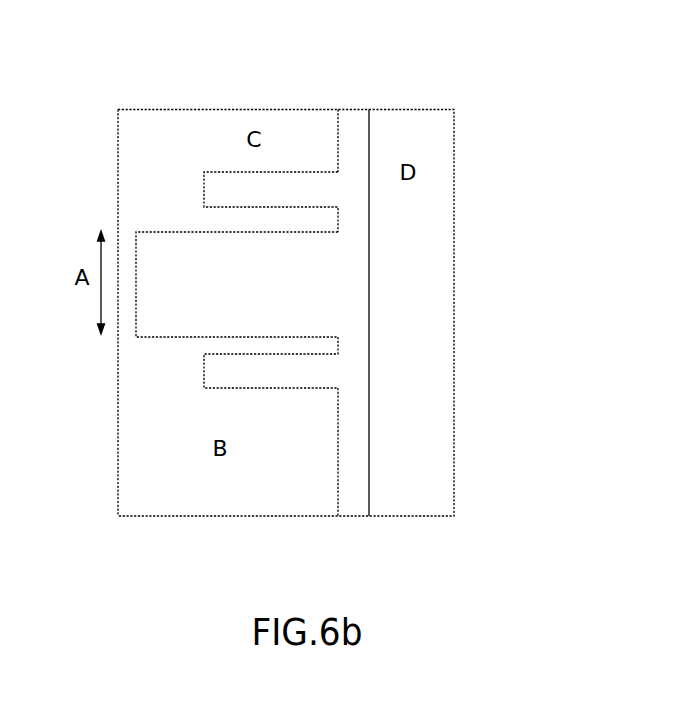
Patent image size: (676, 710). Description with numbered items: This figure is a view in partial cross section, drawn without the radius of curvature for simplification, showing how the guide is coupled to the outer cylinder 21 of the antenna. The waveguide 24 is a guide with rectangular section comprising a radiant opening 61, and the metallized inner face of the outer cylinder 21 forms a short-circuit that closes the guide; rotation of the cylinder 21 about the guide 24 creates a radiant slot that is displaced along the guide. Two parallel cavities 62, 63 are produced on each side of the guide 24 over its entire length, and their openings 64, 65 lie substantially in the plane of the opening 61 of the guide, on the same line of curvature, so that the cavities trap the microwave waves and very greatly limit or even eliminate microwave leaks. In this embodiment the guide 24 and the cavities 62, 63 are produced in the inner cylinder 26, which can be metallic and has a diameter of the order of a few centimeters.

The outer cylinder 21 is at (438, 109).
The waveguide 24 is at (182, 272).
The inner cylinder 26 is at (137, 412).
The radiant opening 61 is at (352, 274).
The cavity 62 is at (298, 366).
The cavity 63 is at (290, 198).
The opening of cavity 64 is at (337, 187).
The opening of cavity 65 is at (340, 378).